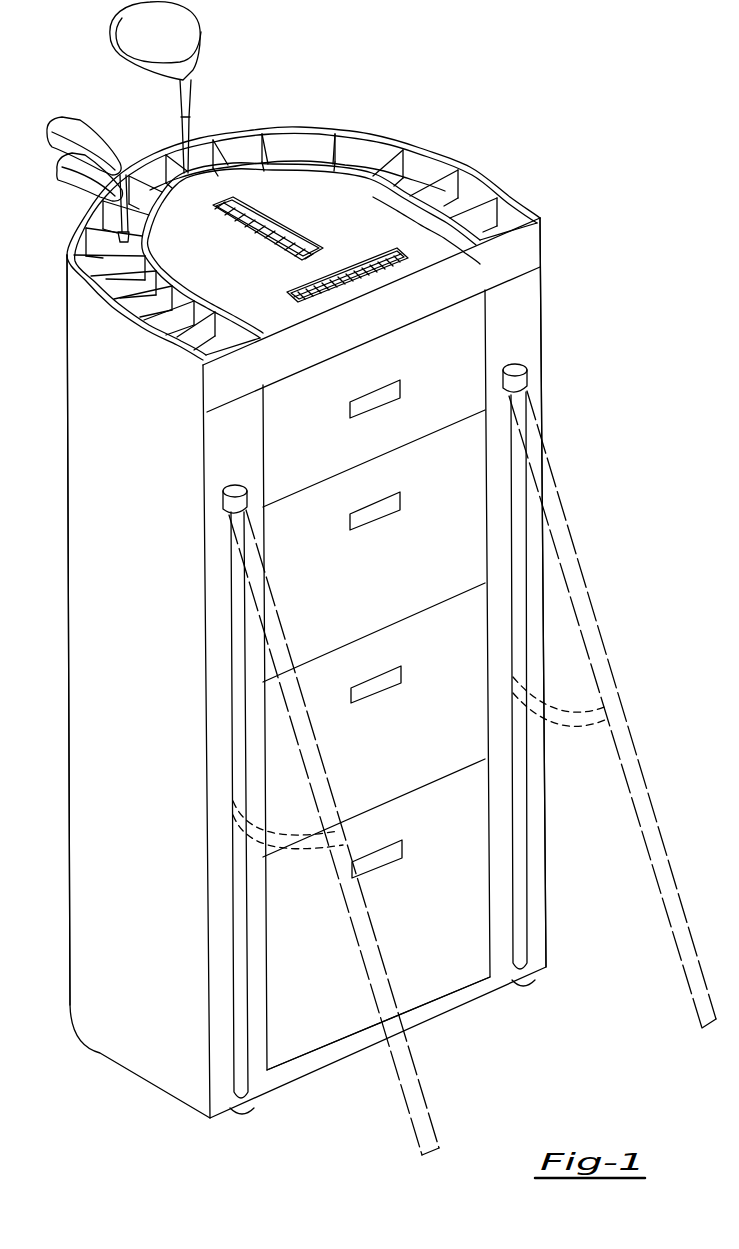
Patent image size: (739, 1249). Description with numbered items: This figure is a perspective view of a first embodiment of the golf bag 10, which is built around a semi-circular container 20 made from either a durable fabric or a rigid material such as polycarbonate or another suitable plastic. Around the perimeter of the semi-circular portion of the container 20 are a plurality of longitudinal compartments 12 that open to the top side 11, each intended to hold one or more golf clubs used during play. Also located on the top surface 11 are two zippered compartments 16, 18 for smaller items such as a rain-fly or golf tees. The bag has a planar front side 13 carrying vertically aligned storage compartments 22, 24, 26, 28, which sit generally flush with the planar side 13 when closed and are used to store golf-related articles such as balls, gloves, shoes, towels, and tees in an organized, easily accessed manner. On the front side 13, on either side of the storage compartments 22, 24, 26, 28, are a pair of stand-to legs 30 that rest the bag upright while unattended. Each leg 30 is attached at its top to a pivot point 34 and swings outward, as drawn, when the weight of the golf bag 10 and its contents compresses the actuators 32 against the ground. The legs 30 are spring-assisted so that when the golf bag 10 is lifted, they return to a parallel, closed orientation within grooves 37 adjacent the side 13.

The golf bag 10 is at (538, 188).
The top side 11 is at (237, 182).
The longitudinal compartments 12 is at (303, 133).
The planar front side 13 is at (533, 343).
The zippered compartment 16 is at (377, 260).
The zippered compartment 18 is at (267, 230).
The semi-circular container 20 is at (87, 508).
The storage compartment 22 is at (464, 824).
The storage compartment 24 is at (459, 643).
The storage compartment 26 is at (459, 496).
The storage compartment 28 is at (459, 385).
The stand-to legs 30 is at (423, 1100).
The actuators 32 is at (253, 1108).
The pivot points 34 is at (233, 483).
The grooves 37 is at (242, 980).